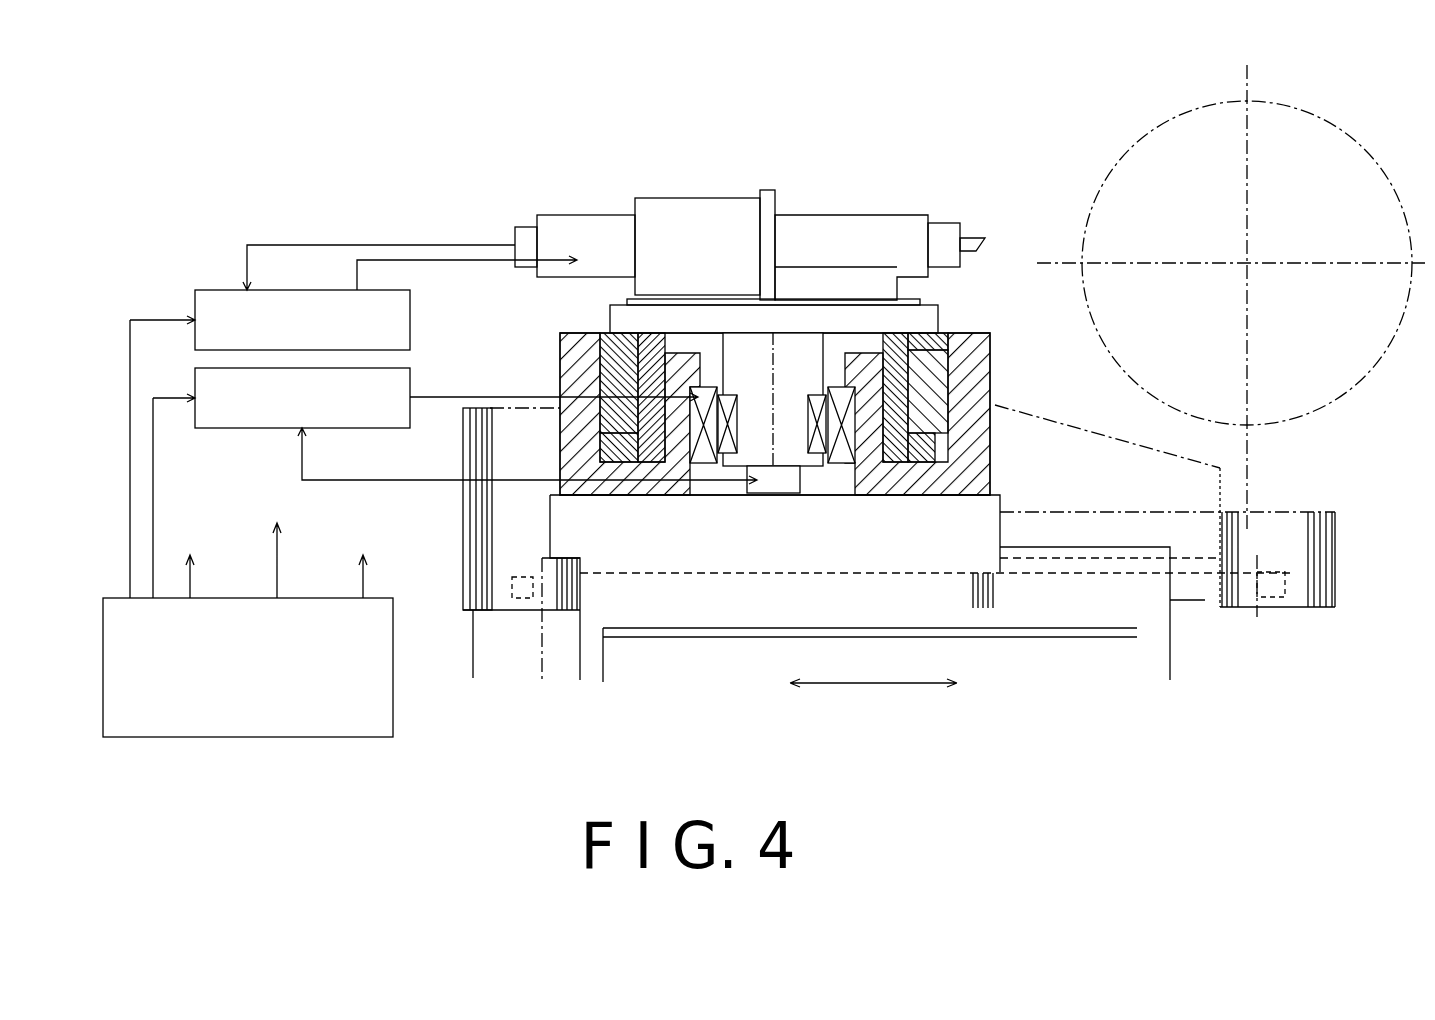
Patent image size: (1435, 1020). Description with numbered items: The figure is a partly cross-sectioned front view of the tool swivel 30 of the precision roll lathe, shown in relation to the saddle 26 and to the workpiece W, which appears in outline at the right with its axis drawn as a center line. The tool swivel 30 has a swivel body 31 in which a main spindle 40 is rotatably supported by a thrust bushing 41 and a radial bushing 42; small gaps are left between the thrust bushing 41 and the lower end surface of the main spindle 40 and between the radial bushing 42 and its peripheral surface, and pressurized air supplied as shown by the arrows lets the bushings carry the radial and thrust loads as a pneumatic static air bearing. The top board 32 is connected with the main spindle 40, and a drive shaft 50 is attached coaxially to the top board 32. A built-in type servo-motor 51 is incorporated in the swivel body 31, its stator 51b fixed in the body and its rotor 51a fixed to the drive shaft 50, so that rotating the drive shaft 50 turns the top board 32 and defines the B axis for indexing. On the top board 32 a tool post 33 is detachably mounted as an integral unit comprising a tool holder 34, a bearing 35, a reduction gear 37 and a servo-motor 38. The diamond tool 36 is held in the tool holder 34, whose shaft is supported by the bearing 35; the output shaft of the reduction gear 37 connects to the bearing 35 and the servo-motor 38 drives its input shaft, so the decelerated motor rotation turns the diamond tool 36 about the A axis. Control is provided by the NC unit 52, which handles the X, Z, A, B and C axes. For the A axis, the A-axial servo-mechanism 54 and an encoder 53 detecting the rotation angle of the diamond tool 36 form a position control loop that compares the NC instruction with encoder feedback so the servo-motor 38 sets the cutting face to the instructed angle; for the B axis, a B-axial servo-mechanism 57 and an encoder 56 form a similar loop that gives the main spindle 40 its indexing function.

The saddle 26 is at (1130, 665).
The tool swivel 30 is at (1000, 380).
The swivel body 31 is at (992, 345).
The top board 32 is at (612, 323).
The tool post 33 is at (752, 178).
The tool holder 34 is at (940, 228).
The bearing 35 is at (830, 222).
The diamond tool 36 is at (985, 240).
The reduction gear 37 is at (693, 212).
The servo-motor 38 is at (577, 225).
The main spindle 40 is at (655, 462).
The thrust bushing 41 is at (602, 448).
The radial bushing 42 is at (612, 367).
The drive shaft 50 is at (787, 472).
The built-in type servo-motor 51 is at (838, 468).
The rotor 51a is at (813, 393).
The stator 51b is at (840, 390).
The NC unit 52 is at (277, 737).
The encoder 53 is at (523, 233).
The A-axial servo-mechanism 54 is at (412, 312).
The encoder 56 is at (744, 497).
The B-axial servo-mechanism 57 is at (412, 382).
The workpiece W is at (1298, 112).